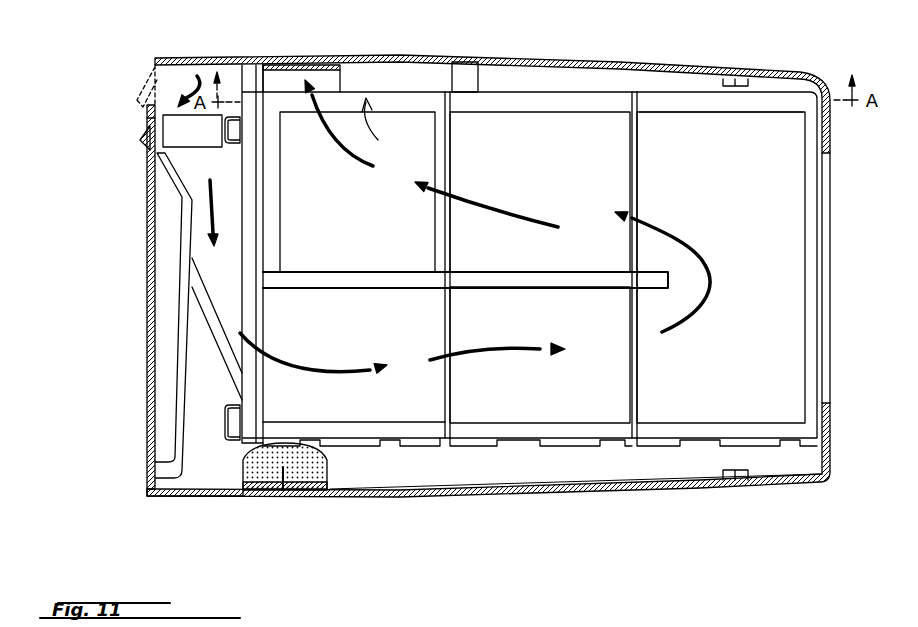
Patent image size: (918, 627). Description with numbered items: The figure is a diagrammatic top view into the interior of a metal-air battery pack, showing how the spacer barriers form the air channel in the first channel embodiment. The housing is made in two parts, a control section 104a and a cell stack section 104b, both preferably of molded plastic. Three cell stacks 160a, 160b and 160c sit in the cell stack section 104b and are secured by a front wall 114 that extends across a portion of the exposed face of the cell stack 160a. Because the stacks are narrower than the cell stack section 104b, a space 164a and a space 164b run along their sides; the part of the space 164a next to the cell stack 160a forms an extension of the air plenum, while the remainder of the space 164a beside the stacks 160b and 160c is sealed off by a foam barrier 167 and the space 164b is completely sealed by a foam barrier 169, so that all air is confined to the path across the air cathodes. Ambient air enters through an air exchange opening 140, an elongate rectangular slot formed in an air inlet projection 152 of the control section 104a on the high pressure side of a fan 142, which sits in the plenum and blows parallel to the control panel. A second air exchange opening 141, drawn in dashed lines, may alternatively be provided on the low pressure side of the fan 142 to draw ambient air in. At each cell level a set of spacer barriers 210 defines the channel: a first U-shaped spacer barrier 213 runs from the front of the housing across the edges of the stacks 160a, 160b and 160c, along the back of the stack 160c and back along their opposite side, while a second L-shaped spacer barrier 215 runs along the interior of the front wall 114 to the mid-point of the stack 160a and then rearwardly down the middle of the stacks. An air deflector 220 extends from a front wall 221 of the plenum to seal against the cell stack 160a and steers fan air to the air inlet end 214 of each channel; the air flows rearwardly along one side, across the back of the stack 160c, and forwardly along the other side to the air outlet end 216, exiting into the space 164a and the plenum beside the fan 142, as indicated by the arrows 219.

The control section 104a is at (218, 497).
The cell stack section 104b is at (600, 482).
The front wall 114 is at (252, 200).
The air exchange opening 140 is at (140, 148).
The second air exchange opening 141 is at (135, 90).
The fan 142 is at (150, 122).
The air inlet projection 152 is at (148, 137).
The cell stack 160a is at (383, 222).
The cell stack 160b is at (571, 180).
The cell stack 160c is at (763, 380).
The space 164a is at (272, 78).
The space 164b is at (460, 470).
The foam barrier 167 is at (462, 75).
The foam barrier 169 is at (273, 497).
The spacer barriers 210 is at (683, 118).
The first U-shaped spacer barrier 213 is at (607, 112).
The air inlet end 214 is at (270, 331).
The second L-shaped spacer barrier 215 is at (280, 241).
The air outlet end 216 is at (378, 140).
The arrows 219 is at (190, 78).
The air deflector 220 is at (192, 328).
The front wall 221 is at (183, 233).